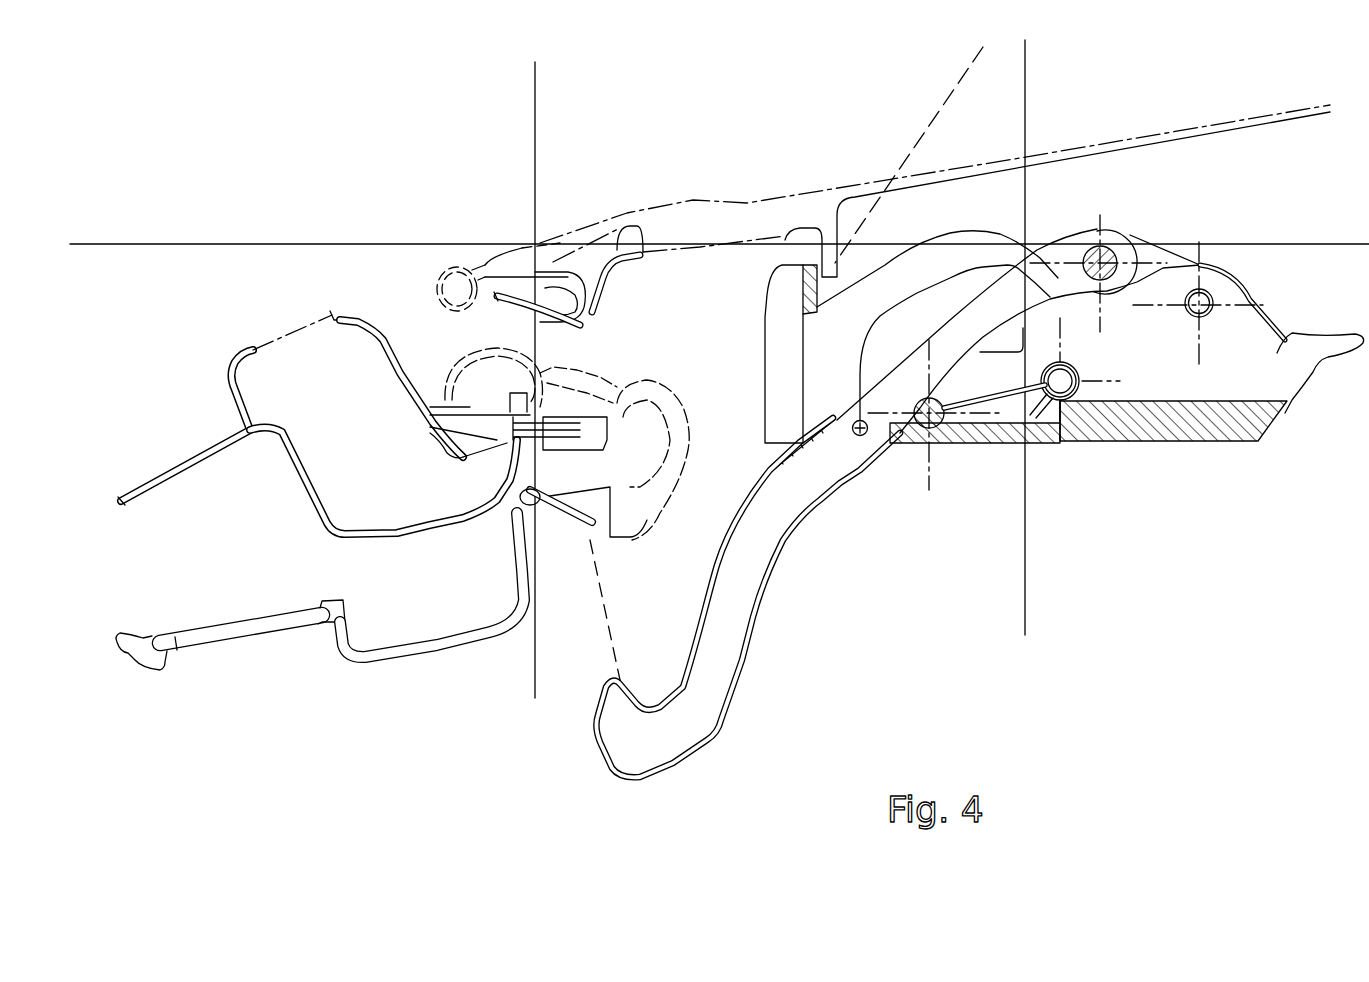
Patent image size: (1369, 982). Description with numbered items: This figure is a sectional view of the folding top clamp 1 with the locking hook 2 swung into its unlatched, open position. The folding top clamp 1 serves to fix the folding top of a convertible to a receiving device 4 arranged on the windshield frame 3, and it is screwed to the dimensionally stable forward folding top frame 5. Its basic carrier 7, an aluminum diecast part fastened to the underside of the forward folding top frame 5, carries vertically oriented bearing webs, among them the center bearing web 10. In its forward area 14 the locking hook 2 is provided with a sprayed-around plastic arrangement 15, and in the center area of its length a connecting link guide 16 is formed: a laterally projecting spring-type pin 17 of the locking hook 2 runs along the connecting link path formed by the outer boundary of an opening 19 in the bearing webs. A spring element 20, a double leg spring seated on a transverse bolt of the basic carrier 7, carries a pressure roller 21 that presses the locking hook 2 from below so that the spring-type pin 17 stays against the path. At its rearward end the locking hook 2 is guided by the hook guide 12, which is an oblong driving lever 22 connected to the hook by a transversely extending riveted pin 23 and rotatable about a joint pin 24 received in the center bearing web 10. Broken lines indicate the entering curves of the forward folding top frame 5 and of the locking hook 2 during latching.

The folding top clamp 1 is at (719, 435).
The locking hook 2 is at (898, 512).
The windshield frame 3 is at (205, 445).
The receiving device 4 is at (630, 520).
The forward folding top frame 5 is at (1097, 150).
The basic carrier 7 is at (790, 312).
The bearing web 10 is at (1302, 333).
The hook guide 12 is at (1190, 247).
The forward area 14 is at (730, 729).
The sprayed-around plastic arrangement 15 is at (803, 517).
The connecting link guide 16 is at (985, 265).
The spring-type pin 17 is at (866, 436).
The opening 19 is at (911, 322).
The spring element 20 is at (1036, 403).
The pressure roller 21 is at (942, 422).
The driving lever 22 is at (1157, 252).
The riveted pin 23 is at (1208, 289).
The joint pin 24 is at (1108, 247).